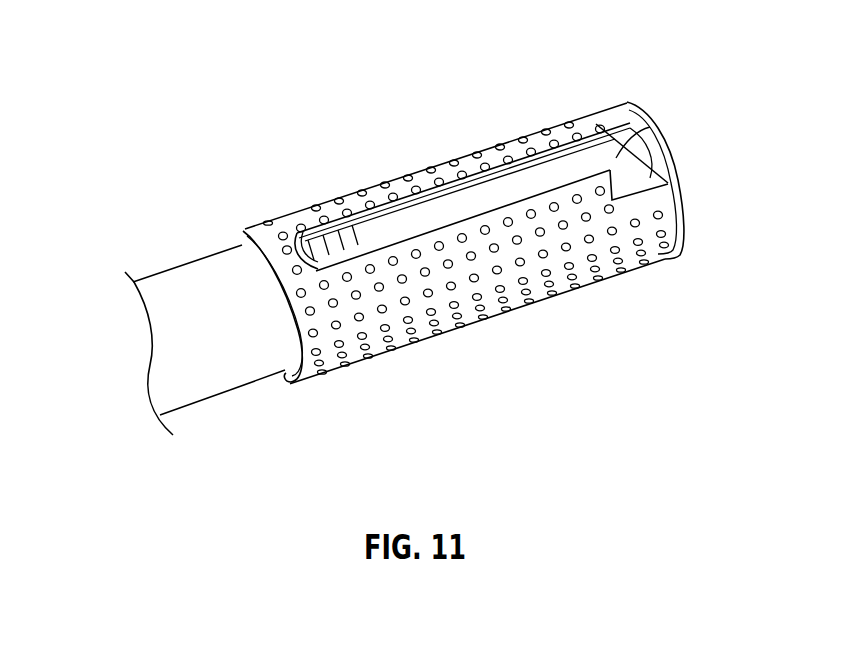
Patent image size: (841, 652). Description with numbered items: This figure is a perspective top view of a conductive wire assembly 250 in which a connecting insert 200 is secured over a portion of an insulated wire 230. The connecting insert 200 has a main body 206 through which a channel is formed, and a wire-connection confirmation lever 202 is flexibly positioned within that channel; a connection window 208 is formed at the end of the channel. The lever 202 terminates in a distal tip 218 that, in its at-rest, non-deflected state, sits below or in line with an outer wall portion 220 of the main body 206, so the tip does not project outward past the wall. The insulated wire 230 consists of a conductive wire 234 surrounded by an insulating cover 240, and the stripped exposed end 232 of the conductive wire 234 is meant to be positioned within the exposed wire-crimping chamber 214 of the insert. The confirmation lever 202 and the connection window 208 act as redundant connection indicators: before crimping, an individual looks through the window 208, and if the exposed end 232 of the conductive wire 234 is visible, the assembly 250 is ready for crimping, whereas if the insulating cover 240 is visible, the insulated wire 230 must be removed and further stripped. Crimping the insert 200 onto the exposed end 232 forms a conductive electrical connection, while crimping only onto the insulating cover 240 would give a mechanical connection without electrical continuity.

The connecting insert 200 is at (507, 315).
The wire-connection confirmation lever 202 is at (388, 232).
The main body 206 is at (270, 224).
The connection window 208 is at (677, 171).
The exposed wire-crimping chamber 214 is at (592, 133).
The distal tip 218 is at (582, 158).
The outer wall portion 220 is at (303, 230).
The insulated wire 230 is at (202, 403).
The exposed end 232 is at (652, 133).
The conductive wire 234 is at (613, 110).
The insulating cover 240 is at (258, 383).
The conductive wire assembly 250 is at (146, 201).